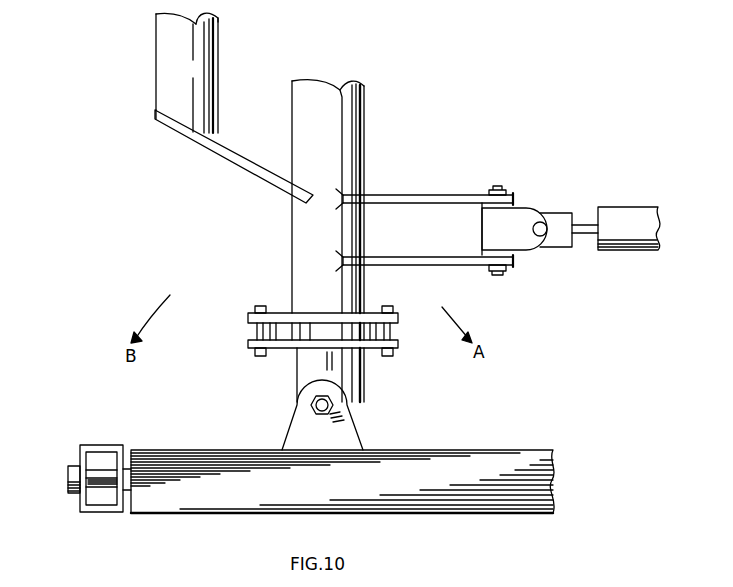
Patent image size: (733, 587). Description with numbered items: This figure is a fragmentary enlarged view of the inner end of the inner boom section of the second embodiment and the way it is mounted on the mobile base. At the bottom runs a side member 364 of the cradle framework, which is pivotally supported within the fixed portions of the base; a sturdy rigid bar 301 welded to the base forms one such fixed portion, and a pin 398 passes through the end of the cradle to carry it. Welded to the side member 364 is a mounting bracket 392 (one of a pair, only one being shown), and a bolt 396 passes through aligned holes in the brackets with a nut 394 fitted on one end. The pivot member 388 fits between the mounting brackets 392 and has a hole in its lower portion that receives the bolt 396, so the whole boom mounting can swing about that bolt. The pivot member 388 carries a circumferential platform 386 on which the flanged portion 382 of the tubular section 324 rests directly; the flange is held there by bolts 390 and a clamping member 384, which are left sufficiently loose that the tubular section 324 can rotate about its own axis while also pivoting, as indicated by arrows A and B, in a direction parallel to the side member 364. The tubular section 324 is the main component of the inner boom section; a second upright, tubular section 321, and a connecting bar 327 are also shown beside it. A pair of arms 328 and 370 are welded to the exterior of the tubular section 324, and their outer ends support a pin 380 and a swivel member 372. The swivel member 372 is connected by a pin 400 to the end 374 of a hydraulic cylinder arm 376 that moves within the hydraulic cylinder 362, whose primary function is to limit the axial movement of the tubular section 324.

The post 321 is at (219, 101).
The cross bar 327 is at (240, 157).
The tubular section 324 is at (356, 152).
The arm 328 is at (408, 193).
The arm 370 is at (398, 257).
The pin 380 is at (497, 189).
The swivel member 372 is at (522, 212).
The end of hydraulic cylinder arm 374 is at (566, 205).
The hydraulic cylinder arm 376 is at (590, 215).
The hydraulic cylinder 362 is at (640, 207).
The pin 400 is at (543, 236).
The clamping member 384 is at (248, 318).
The circumferential platform 386 is at (248, 345).
The flanged portion 382 is at (284, 320).
The bolts 390 is at (258, 306).
The pivot member 388 is at (305, 374).
The mounting bracket 392 is at (290, 421).
The nut 394 is at (335, 408).
The bolt 396 is at (340, 423).
The side member 364 is at (222, 451).
The fixed portion 301 is at (99, 445).
The pin 398 is at (68, 478).